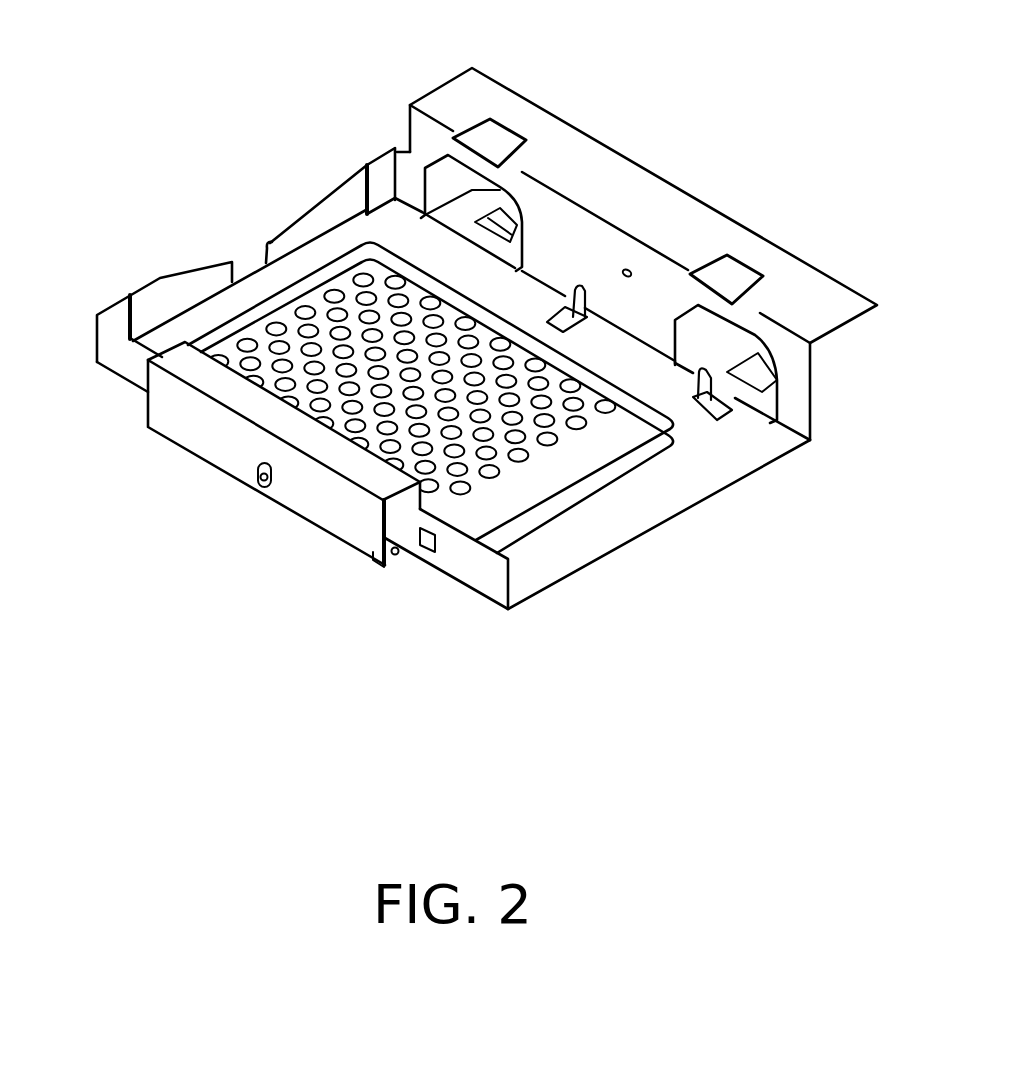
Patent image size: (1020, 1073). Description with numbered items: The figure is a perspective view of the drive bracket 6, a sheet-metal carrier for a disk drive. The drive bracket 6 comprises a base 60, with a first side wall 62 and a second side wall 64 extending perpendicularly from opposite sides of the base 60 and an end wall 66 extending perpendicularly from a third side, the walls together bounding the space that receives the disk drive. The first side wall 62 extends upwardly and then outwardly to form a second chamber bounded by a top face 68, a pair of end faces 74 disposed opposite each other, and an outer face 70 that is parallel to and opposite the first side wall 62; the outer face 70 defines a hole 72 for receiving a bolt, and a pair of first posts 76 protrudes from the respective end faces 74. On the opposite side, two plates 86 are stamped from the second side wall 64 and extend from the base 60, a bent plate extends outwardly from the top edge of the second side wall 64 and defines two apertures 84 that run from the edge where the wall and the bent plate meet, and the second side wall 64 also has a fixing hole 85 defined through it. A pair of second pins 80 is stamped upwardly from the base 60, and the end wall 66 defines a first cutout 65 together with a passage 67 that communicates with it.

The drive bracket 6 is at (516, 60).
The base 60 is at (550, 487).
The first side wall 62 is at (482, 585).
The second side wall 64 is at (790, 362).
The first cutout 65 is at (242, 262).
The end wall 66 is at (315, 210).
The passage 67 is at (265, 258).
The top face 68 is at (207, 380).
The outer face 70 is at (232, 465).
The hole 72 is at (262, 484).
The end faces 74 is at (140, 383).
The first posts 76 is at (396, 565).
The second pins 80 is at (577, 283).
The apertures 84 is at (497, 137).
The fixing hole 85 is at (628, 266).
The plates 86 is at (457, 207).